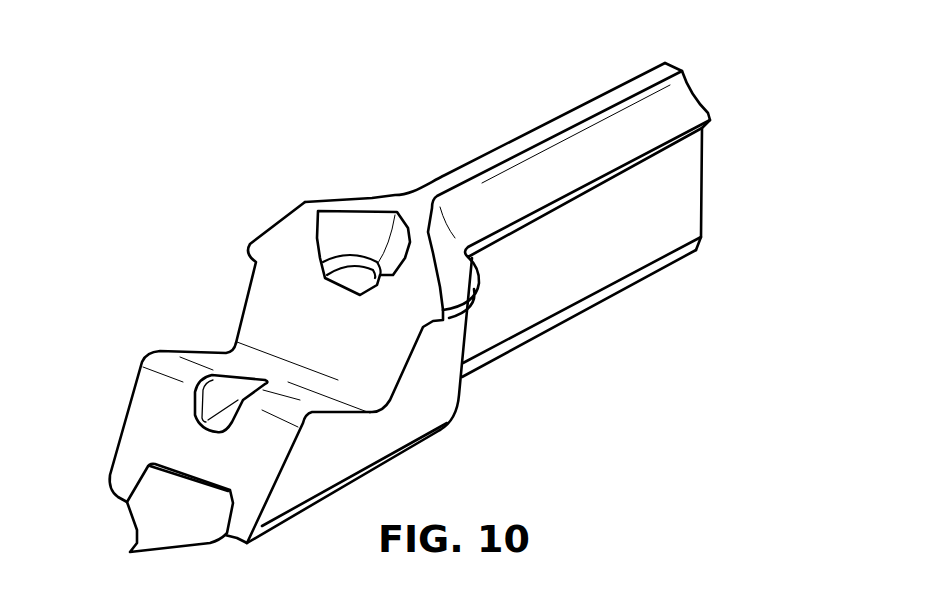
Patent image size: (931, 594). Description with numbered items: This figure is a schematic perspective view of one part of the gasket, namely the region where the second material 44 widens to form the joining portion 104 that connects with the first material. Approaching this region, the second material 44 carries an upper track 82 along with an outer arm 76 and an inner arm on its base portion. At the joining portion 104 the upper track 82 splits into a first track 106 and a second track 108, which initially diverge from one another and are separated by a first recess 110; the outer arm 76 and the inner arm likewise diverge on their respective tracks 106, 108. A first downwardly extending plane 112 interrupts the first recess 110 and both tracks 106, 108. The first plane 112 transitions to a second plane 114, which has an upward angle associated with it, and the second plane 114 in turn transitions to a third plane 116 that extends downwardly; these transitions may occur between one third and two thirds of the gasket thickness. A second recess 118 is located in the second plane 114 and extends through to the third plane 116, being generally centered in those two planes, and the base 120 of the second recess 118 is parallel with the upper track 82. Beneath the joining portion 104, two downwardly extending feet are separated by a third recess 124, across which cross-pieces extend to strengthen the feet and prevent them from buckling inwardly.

The second material 44 is at (677, 97).
The upper track 82 is at (615, 93).
The outer arm 76 is at (703, 125).
The joining portion 104 is at (445, 431).
The first track 106 is at (328, 203).
The second track 108 is at (420, 220).
The first recess 110 is at (357, 221).
The first downwardly extending plane 112 is at (400, 352).
The second plane 114 is at (338, 405).
The third plane 116 is at (142, 413).
The second recess 118 is at (222, 388).
The base of the second recess 120 is at (216, 431).
The third recess 124 is at (207, 490).